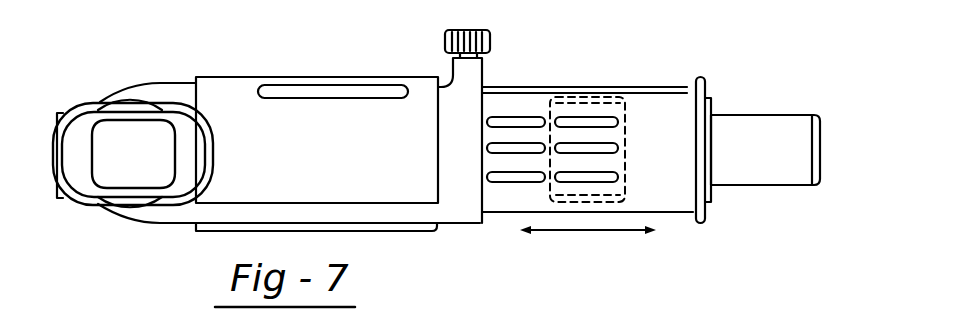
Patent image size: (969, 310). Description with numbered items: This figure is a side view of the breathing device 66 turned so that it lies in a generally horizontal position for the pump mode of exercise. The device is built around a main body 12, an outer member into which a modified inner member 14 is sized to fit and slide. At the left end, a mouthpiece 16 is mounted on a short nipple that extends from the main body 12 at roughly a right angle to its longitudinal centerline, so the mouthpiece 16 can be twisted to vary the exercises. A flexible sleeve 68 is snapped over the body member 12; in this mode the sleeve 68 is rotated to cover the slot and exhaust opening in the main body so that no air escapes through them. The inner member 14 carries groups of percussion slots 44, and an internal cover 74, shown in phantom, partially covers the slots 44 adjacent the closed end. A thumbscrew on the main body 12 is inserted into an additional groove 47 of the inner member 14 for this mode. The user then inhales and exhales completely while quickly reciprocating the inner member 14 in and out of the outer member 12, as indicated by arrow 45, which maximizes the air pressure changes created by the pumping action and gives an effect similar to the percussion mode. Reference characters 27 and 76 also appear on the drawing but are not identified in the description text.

The breathing device 66 is at (154, 68).
The flexible sleeve 68 is at (292, 70).
The mouthpiece 16 is at (72, 160).
The main body 12 is at (239, 172).
The percussion slots 44 is at (570, 118).
The internal cover 74 is at (613, 92).
The additional groove 47 is at (648, 87).
The inner member 14 is at (671, 193).
The collar 27 is at (706, 98).
The arrow 45 is at (576, 233).
The reference numeral (partial) 76 is at (783, 304).